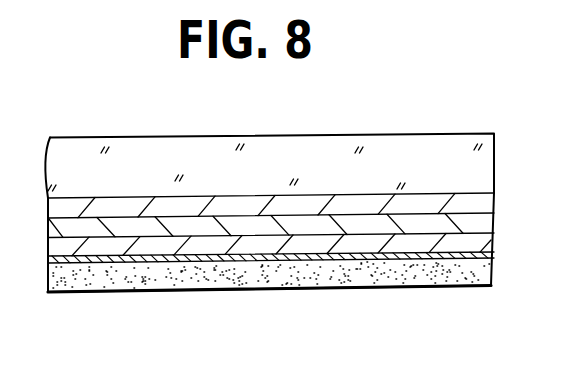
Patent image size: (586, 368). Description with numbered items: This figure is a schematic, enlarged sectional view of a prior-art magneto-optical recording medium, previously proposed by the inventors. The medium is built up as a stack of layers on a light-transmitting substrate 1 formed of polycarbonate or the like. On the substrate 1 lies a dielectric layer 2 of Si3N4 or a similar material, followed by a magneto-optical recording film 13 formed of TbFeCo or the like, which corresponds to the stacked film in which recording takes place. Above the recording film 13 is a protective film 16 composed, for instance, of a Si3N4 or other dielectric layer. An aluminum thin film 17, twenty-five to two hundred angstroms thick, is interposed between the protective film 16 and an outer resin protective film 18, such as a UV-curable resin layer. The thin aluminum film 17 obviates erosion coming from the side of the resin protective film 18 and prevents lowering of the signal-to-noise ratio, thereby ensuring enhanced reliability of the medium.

The light-transmitting substrate 1 is at (484, 163).
The dielectric layer 2 is at (483, 200).
The magneto-optical recording film 13 is at (484, 223).
The protective film 16 is at (489, 238).
The aluminum thin film 17 is at (352, 253).
The resin protective film 18 is at (120, 278).